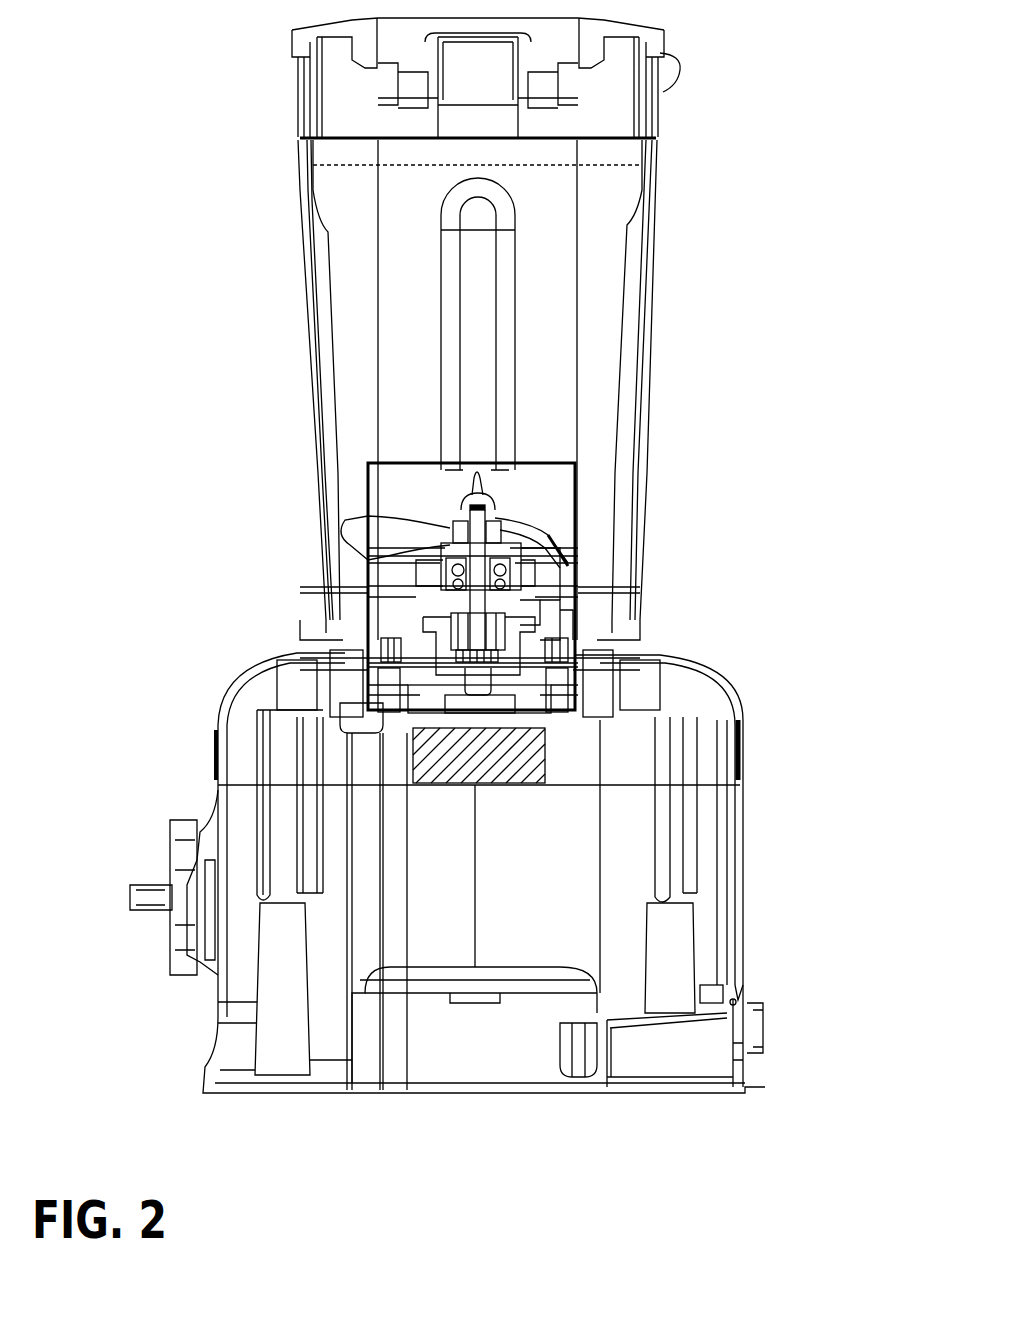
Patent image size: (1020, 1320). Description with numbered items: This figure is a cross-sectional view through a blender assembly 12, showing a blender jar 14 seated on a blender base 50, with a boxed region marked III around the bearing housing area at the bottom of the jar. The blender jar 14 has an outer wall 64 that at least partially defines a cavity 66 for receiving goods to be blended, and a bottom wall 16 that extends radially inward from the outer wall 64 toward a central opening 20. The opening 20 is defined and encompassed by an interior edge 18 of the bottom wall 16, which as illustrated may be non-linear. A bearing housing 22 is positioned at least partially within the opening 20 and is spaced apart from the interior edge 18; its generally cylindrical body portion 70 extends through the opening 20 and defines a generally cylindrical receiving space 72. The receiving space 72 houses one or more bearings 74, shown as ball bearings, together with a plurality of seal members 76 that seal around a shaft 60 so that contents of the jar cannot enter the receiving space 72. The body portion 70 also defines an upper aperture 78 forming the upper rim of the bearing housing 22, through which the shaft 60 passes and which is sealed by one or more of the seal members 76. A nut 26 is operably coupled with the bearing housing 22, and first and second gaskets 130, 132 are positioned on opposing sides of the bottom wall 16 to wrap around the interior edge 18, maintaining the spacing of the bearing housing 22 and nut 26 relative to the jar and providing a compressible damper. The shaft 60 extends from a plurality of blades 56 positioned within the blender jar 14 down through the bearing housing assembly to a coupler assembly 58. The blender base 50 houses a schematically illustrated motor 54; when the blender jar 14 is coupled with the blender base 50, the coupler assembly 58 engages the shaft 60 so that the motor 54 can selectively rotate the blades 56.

The blender assembly 12 is at (735, 57).
The blender jar 14 is at (692, 218).
The bottom wall 16 is at (530, 585).
The interior edge 18 is at (550, 535).
The opening 20 is at (450, 608).
The bearing housing 22 is at (435, 590).
The nut 26 is at (600, 700).
The blender base 50 is at (752, 945).
The motor 54 is at (523, 753).
The plurality of blades 56 is at (430, 555).
The coupler assembly 58 is at (436, 663).
The shaft 60 is at (460, 532).
The outer wall 64 is at (595, 308).
The cavity 66 is at (603, 160).
The body portion 70 is at (455, 540).
The receiving space 72 is at (545, 590).
The bearings 74 is at (430, 600).
The seal members 76 is at (525, 530).
The upper aperture 78 is at (498, 525).
The first gasket 130 is at (540, 556).
The second gasket 132 is at (565, 565).
The detail region III is at (600, 510).